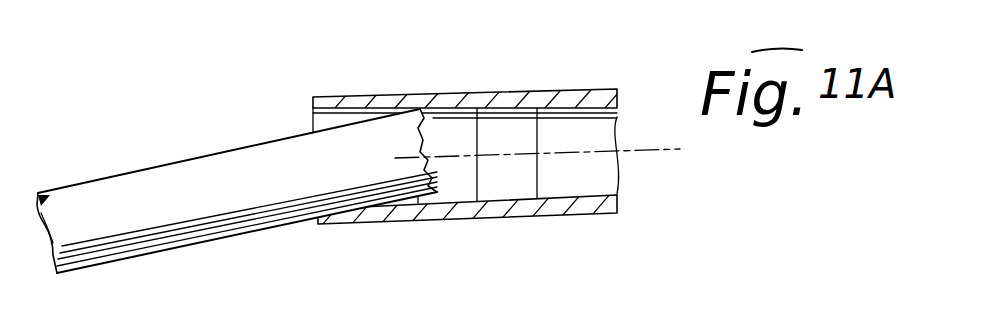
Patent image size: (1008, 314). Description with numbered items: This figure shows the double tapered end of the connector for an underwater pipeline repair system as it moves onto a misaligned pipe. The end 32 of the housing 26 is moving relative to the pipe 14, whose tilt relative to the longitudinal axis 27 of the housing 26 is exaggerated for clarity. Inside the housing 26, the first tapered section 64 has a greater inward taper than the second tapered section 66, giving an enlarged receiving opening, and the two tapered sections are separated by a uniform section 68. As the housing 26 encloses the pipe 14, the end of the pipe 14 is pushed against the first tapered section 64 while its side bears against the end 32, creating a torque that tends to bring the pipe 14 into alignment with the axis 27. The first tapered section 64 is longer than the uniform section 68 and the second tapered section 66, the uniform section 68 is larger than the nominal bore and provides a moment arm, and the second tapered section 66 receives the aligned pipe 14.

The second pipe 14 is at (100, 178).
The second end 32 is at (343, 117).
The first tapered section 64 is at (355, 102).
The uniform section 68 is at (433, 97).
The second tapered section 66 is at (497, 106).
The housing 26 is at (535, 92).
The longitudinal axis 27 is at (643, 147).